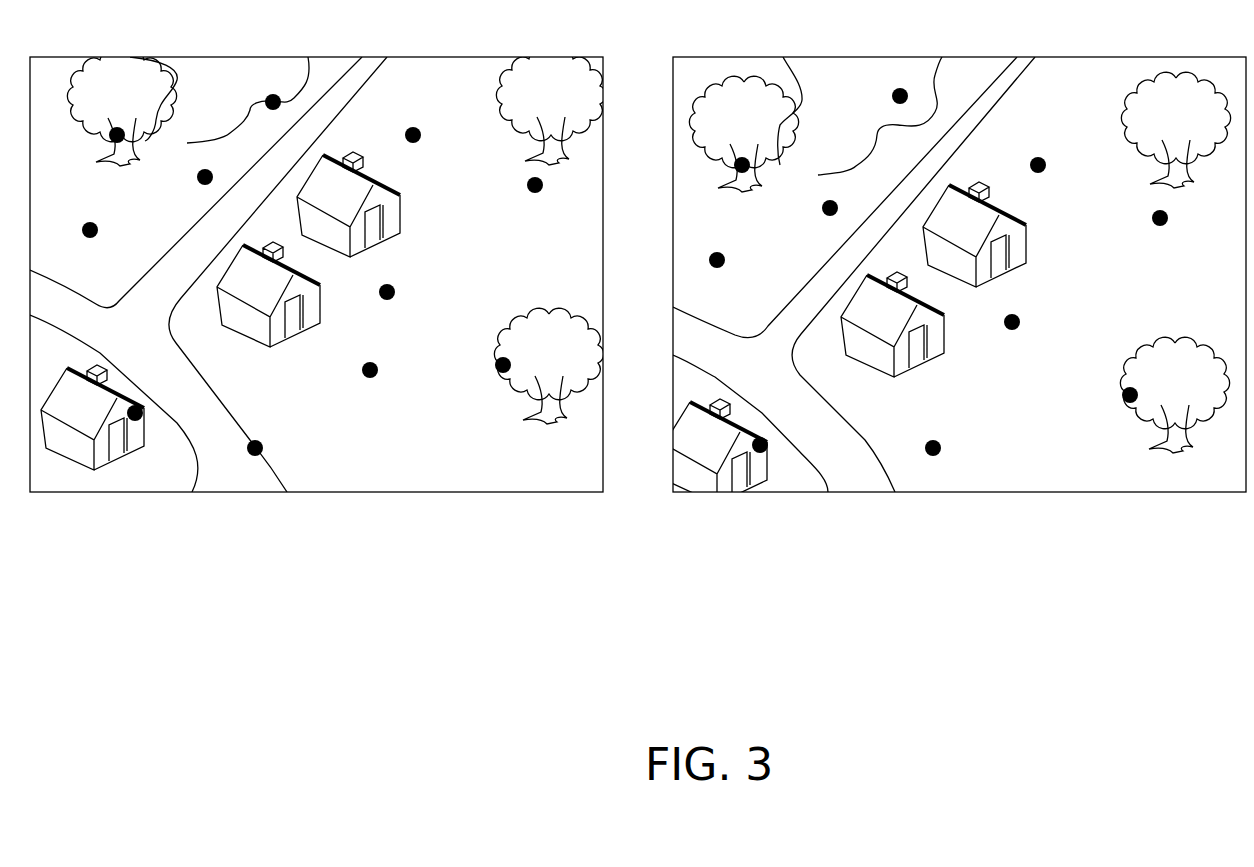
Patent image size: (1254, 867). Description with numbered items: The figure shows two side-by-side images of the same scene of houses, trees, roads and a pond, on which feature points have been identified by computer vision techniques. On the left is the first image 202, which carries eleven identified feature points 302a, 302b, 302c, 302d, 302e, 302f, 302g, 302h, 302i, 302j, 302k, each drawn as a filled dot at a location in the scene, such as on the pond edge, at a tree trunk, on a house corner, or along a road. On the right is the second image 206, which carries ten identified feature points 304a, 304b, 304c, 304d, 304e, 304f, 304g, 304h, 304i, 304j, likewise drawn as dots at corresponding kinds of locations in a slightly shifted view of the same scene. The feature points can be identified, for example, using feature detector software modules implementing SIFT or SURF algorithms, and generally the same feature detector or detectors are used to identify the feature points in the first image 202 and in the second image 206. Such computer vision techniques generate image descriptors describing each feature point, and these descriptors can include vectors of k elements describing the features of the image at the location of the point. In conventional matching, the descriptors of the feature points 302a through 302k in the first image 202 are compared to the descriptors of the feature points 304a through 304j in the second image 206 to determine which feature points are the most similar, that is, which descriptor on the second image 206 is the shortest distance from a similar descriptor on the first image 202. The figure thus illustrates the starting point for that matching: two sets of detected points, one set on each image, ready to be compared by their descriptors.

The first image 202 is at (228, 57).
The second image 206 is at (760, 57).
The feature point 302a is at (268, 94).
The feature point 302b is at (124, 140).
The feature point 302c is at (200, 183).
The feature point 302d is at (96, 236).
The feature point 302e is at (140, 405).
The feature point 302f is at (262, 441).
The feature point 302g is at (377, 377).
The feature point 302h is at (498, 358).
The feature point 302i is at (393, 300).
The feature point 302j is at (529, 192).
The feature point 302k is at (419, 143).
The feature point 304a is at (895, 89).
The feature point 304b is at (749, 172).
The feature point 304c is at (824, 215).
The feature point 304d is at (722, 268).
The feature point 304e is at (766, 438).
The feature point 304f is at (938, 440).
The feature point 304g is at (1123, 392).
The feature point 304h is at (1017, 331).
The feature point 304i is at (1153, 227).
The feature point 304j is at (1045, 174).